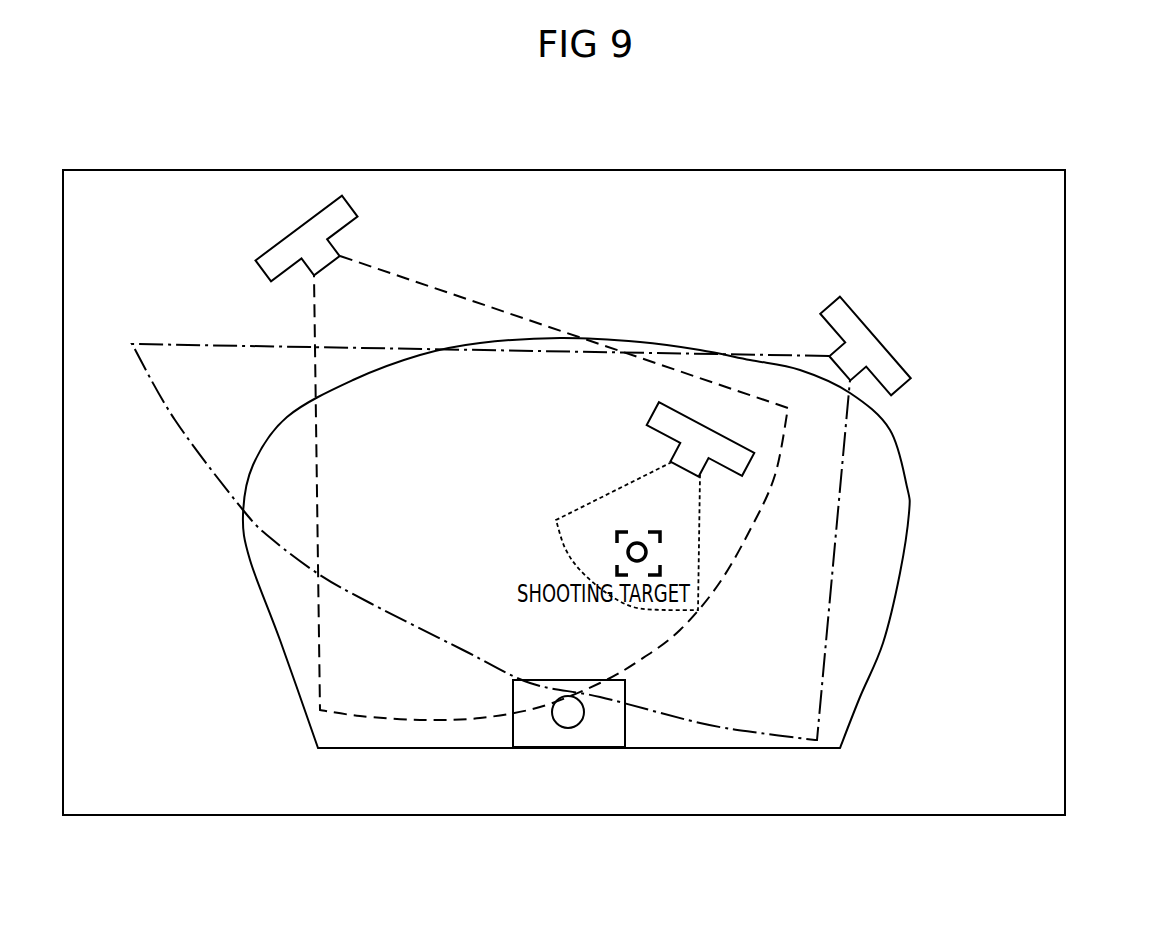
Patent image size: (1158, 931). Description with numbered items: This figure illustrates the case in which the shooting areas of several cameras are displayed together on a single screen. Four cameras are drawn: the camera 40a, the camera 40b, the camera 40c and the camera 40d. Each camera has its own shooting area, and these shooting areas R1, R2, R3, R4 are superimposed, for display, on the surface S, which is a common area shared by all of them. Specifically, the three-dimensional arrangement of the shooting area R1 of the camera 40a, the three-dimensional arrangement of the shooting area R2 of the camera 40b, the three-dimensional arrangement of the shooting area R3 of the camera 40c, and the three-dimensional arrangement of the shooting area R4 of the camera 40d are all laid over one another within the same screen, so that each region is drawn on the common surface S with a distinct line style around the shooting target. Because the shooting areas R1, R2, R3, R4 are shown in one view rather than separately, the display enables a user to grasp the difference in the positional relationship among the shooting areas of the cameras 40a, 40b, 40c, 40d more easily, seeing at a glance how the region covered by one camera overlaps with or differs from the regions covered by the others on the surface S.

The surface S is at (1028, 253).
The camera 40a is at (575, 738).
The camera 40b is at (688, 430).
The camera 40c is at (851, 325).
The camera 40d is at (317, 227).
The shooting area R1 is at (883, 645).
The shooting area R2 is at (702, 550).
The shooting area R3 is at (840, 498).
The shooting area R4 is at (463, 293).